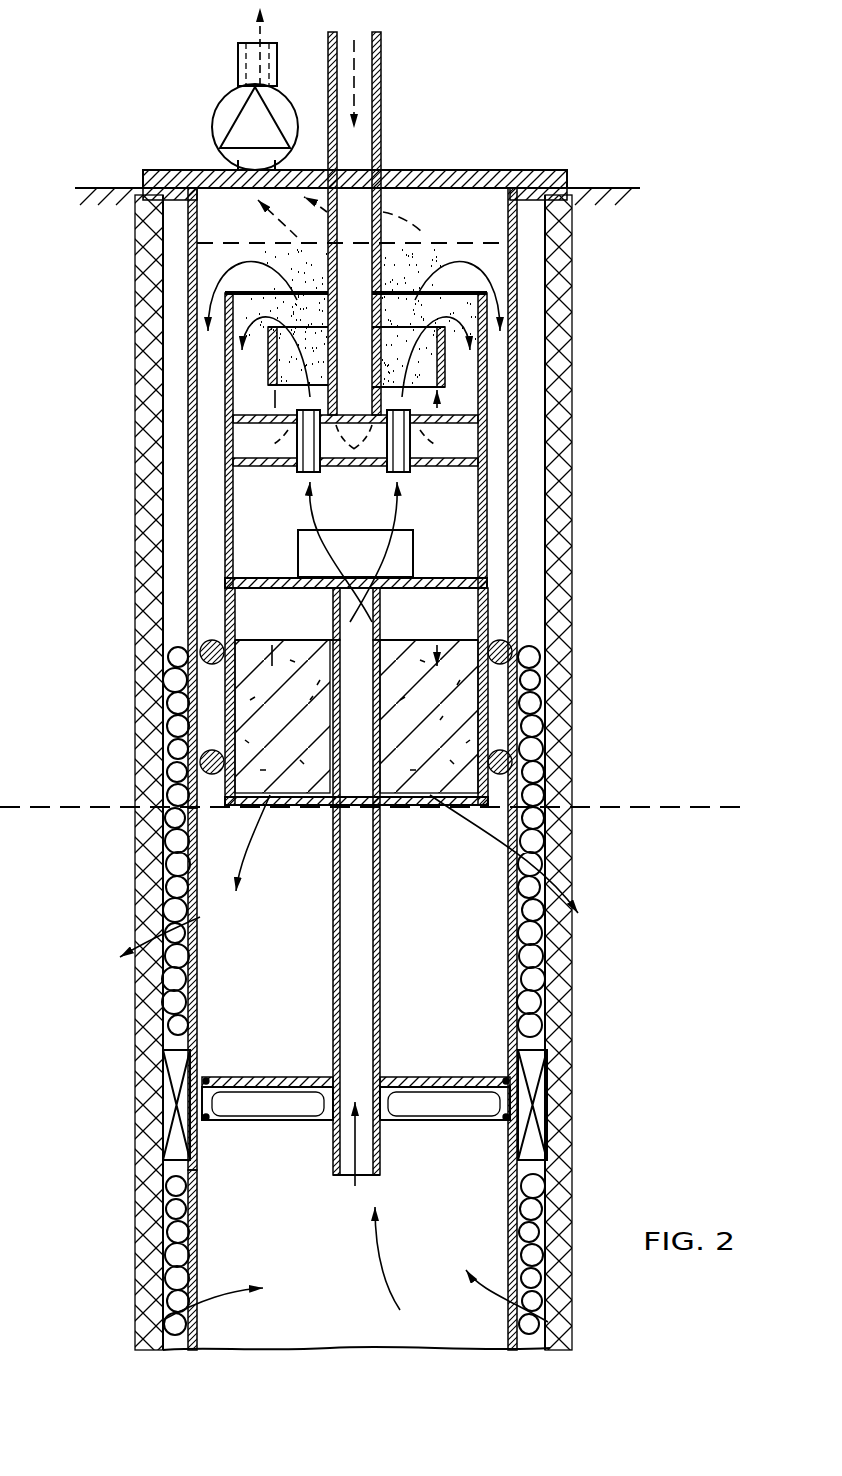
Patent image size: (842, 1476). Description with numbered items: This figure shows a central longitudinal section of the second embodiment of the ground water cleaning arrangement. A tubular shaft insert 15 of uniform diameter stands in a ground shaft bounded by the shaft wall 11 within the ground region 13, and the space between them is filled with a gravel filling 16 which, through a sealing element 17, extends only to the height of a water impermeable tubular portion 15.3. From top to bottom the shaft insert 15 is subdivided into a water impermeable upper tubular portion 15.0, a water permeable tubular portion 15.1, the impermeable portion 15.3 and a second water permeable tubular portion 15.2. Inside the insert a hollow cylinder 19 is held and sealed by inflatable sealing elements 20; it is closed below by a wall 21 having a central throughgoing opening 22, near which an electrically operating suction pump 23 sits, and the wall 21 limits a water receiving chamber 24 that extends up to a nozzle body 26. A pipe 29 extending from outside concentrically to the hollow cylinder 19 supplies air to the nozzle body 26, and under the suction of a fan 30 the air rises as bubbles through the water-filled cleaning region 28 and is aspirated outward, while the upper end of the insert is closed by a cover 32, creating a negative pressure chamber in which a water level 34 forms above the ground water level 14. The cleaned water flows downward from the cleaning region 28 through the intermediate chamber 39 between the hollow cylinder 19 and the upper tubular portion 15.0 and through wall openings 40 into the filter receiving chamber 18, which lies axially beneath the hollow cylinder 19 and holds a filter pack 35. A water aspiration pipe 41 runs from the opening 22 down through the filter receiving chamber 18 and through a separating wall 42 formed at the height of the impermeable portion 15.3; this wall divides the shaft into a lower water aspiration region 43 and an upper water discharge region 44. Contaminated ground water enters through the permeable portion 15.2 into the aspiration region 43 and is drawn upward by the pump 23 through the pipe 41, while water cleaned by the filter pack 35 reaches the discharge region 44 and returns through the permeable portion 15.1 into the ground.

The shaft wall 11 is at (548, 380).
The ground region 13 is at (747, 1039).
The ground water level 14 is at (685, 803).
The shaft insert 15 is at (521, 456).
The water impermeable upper tubular portion 15.0 is at (195, 520).
The water permeable tubular portion 15.1 is at (165, 993).
The second water permeable tubular portion 15.2 is at (190, 1258).
The water impermeable tubular portion 15.3 is at (190, 1140).
The gravel filling 16 is at (530, 960).
The sealing element 17 is at (540, 1095).
The filter receiving chamber 18 is at (490, 625).
The hollow cylinder 19 is at (480, 512).
The inflatable sealing elements 20 is at (525, 655).
The wall 21 is at (452, 576).
The central throughgoing opening 22 is at (378, 605).
The suction pump 23 is at (415, 522).
The water receiving chamber 24 is at (290, 516).
The nozzle body 26 is at (245, 437).
The cleaning region 28 is at (460, 355).
The pipe 29 is at (378, 95).
The fan 30 is at (222, 122).
The cover 32 is at (450, 180).
The water level 34 is at (479, 241).
The filter pack 35 is at (307, 736).
The intermediate chamber 39 is at (232, 365).
The wall openings 40 is at (232, 627).
The water aspiration pipe 41 is at (383, 897).
The separating wall 42 is at (260, 1105).
The water aspiration region 43 is at (353, 1313).
The water discharge region 44 is at (298, 946).